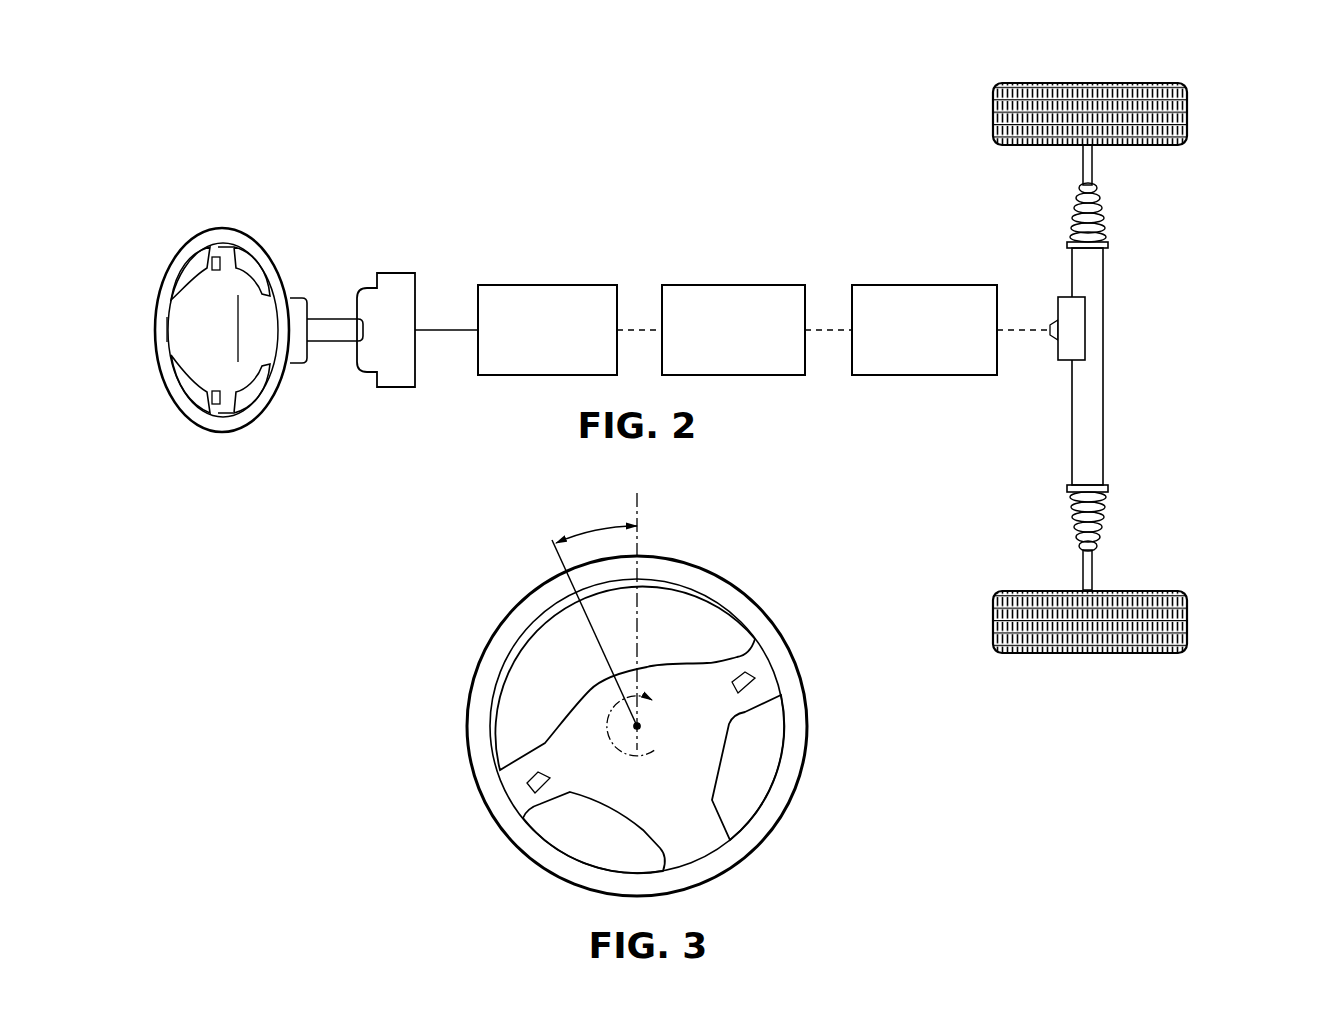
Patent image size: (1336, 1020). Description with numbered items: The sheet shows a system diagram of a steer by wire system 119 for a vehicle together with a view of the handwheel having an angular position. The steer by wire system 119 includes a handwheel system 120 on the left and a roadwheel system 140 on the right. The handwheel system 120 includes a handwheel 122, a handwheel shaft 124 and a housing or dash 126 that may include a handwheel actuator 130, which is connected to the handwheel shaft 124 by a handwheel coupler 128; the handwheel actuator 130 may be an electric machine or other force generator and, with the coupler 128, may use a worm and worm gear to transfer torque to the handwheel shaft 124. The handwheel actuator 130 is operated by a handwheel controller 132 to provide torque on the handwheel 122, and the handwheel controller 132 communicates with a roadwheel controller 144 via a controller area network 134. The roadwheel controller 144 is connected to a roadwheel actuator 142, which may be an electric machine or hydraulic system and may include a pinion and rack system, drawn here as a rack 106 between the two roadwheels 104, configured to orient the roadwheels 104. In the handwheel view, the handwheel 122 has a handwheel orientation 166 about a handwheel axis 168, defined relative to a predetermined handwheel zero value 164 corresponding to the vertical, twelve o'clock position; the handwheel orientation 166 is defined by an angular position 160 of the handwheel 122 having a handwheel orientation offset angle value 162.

In FIG. 2, the roadwheels 104 is at (1192, 122).
In FIG. 2, the steering rack 106 is at (1103, 408).
In FIG. 2, the steer by wire system 119 is at (390, 86).
In FIG. 2, the handwheel system 120 is at (316, 192).
In FIG. 2, the handwheel 122 is at (222, 230).
In FIG. 3, the handwheel 122 is at (812, 716).
In FIG. 2, the handwheel shaft 124 is at (340, 318).
In FIG. 2, the housing or dash 126 is at (370, 286).
In FIG. 2, the handwheel coupler 128 is at (452, 328).
In FIG. 2, the handwheel actuator 130 is at (576, 285).
In FIG. 2, the handwheel controller 132 is at (763, 285).
In FIG. 2, the controller area network (CAN) 134 is at (840, 328).
In FIG. 2, the roadwheel system 140 is at (1228, 313).
In FIG. 2, the roadwheel actuator 142 is at (1085, 328).
In FIG. 2, the roadwheel controller 144 is at (962, 285).
In FIG. 3, the angular position 160 is at (562, 562).
In FIG. 3, the handwheel orientation offset angle value 162 is at (598, 528).
In FIG. 3, the predetermined handwheel zero value 164 is at (640, 517).
In FIG. 3, the handwheel orientation 166 is at (668, 725).
In FIG. 3, the handwheel axis 168 is at (643, 757).